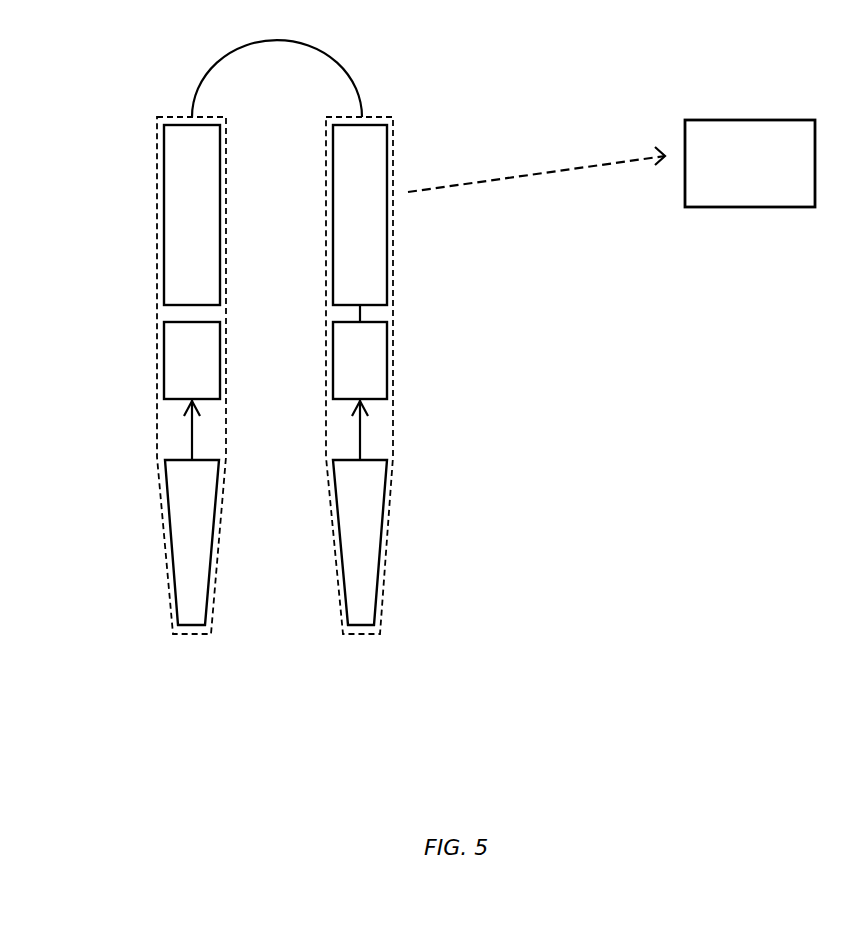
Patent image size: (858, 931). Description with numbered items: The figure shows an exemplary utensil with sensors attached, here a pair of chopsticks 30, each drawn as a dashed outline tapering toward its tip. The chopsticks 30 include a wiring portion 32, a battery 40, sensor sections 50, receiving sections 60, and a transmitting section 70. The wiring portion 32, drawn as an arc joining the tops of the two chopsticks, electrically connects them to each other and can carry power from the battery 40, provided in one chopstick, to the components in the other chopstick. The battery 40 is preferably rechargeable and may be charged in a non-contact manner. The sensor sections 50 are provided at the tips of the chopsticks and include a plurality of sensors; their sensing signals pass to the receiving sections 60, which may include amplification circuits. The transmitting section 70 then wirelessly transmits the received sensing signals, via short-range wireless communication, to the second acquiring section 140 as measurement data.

The chopsticks 30 is at (288, 700).
The wiring portion 32 is at (350, 78).
The battery 40 is at (163, 231).
The sensor sections 50 is at (172, 548).
The receiving sections 60 is at (163, 363).
The transmitting section 70 is at (389, 230).
The second acquiring section 140 is at (788, 120).